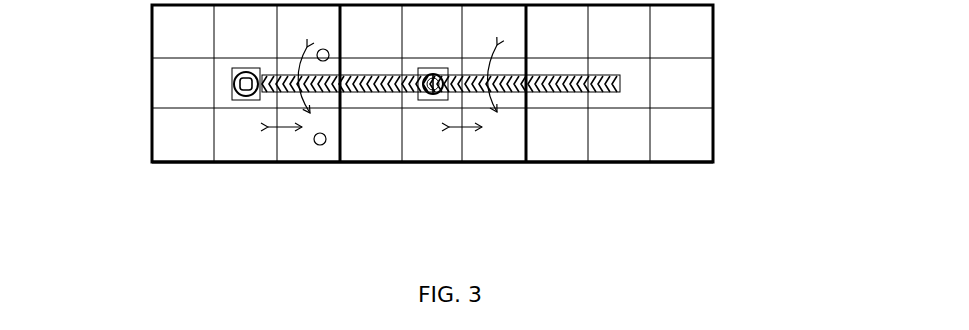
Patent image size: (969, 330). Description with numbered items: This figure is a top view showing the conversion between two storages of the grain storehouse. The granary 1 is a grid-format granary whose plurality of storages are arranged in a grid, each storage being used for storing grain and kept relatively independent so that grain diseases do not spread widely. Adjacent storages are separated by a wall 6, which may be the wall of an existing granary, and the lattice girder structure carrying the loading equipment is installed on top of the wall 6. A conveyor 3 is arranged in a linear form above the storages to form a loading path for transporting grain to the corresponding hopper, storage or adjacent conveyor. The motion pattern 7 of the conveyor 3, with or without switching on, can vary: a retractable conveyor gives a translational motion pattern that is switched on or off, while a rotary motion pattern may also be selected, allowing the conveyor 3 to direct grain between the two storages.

The granary 1 is at (660, 53).
The conveyor 3 is at (287, 85).
The wall 6 is at (243, 163).
The motion pattern 7 is at (490, 70).